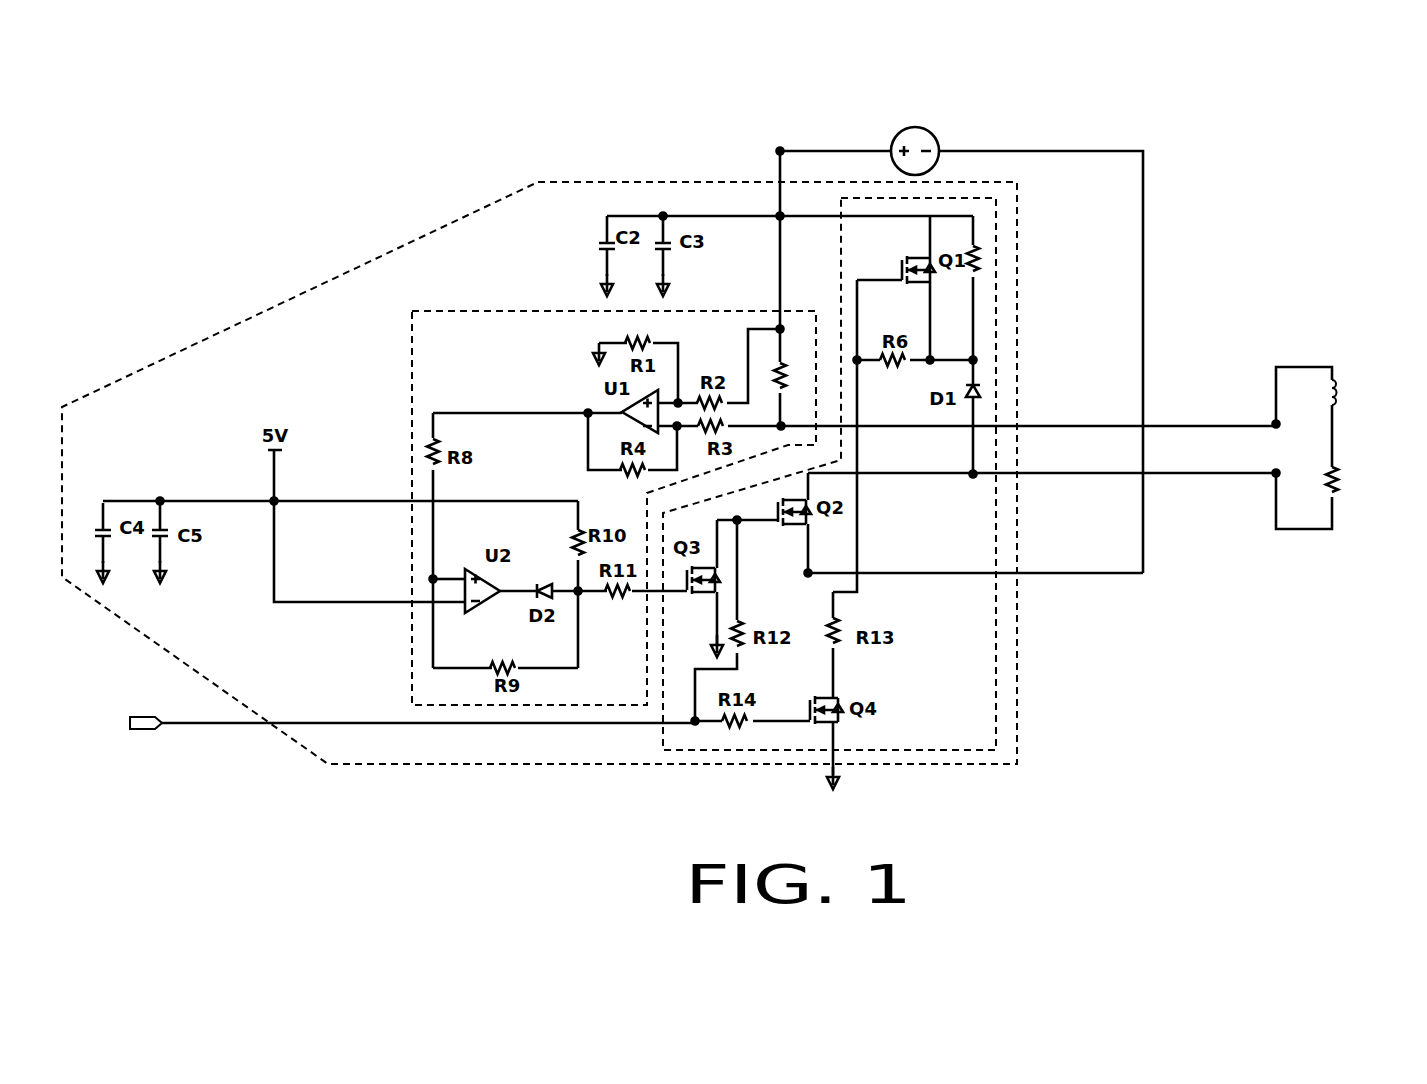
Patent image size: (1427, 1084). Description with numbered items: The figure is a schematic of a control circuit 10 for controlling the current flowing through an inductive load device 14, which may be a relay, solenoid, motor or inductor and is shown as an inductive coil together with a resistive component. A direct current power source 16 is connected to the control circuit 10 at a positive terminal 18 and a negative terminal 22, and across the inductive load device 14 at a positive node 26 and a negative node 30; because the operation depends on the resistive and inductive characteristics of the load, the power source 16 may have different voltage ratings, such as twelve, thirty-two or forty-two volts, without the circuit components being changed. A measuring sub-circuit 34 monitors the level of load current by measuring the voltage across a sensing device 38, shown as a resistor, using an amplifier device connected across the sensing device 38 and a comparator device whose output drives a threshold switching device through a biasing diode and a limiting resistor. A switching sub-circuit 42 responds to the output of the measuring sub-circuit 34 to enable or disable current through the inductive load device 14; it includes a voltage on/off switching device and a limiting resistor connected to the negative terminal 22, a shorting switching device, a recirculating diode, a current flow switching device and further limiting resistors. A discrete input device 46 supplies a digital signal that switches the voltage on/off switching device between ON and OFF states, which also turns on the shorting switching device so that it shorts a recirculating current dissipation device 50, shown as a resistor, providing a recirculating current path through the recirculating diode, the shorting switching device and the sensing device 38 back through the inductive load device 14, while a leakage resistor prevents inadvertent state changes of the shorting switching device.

The control circuit 10 is at (632, 182).
The inductive load device 14 is at (1310, 367).
The direct current power source 16 is at (930, 133).
The positive terminal 18 is at (780, 151).
The negative terminal 22 is at (808, 576).
The positive node 26 is at (781, 426).
The negative node 30 is at (973, 474).
The measuring sub-circuit 34 is at (466, 311).
The sensing device 38 is at (779, 368).
The switching sub-circuit 42 is at (996, 368).
The discrete input device 46 is at (142, 729).
The recirculating current dissipation device 50 is at (973, 270).